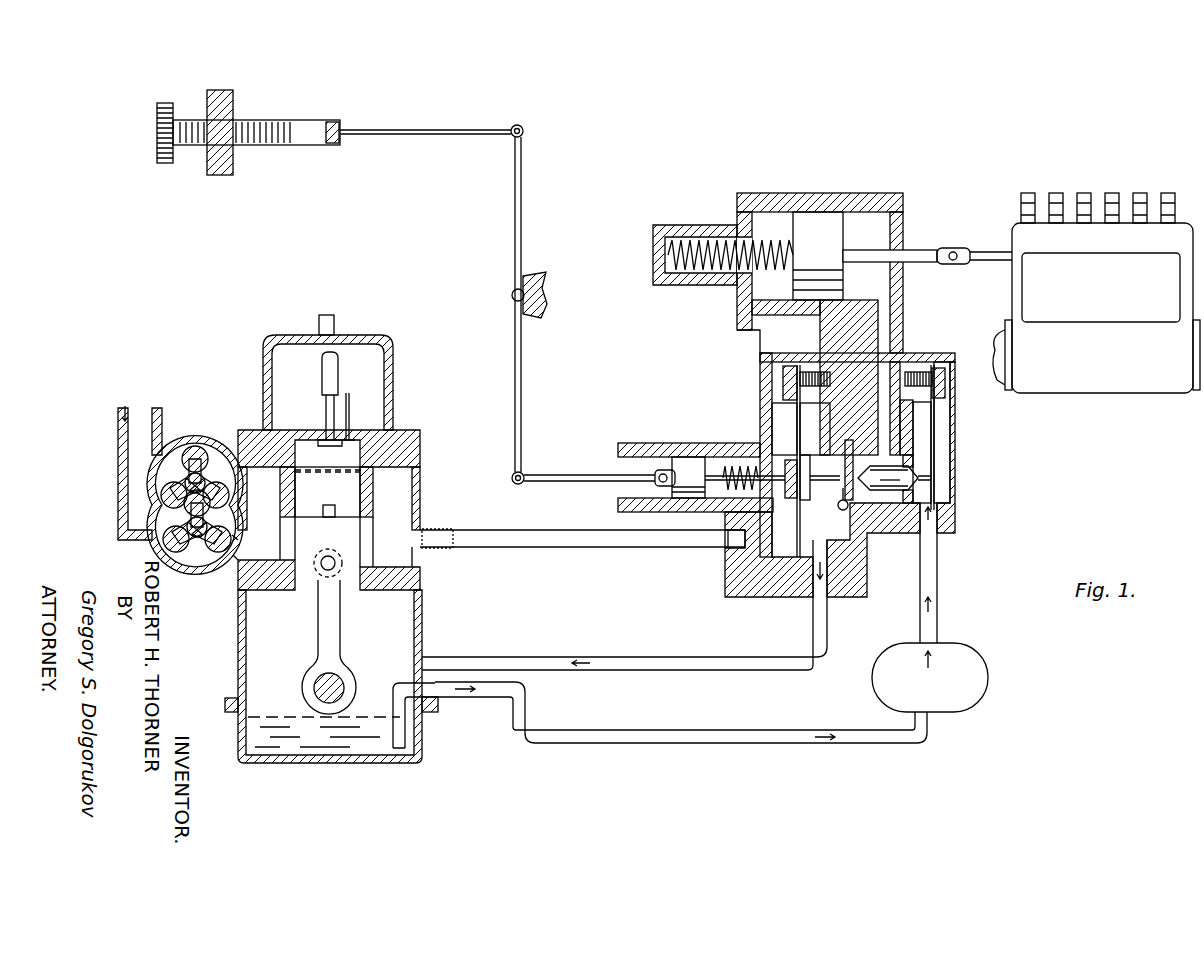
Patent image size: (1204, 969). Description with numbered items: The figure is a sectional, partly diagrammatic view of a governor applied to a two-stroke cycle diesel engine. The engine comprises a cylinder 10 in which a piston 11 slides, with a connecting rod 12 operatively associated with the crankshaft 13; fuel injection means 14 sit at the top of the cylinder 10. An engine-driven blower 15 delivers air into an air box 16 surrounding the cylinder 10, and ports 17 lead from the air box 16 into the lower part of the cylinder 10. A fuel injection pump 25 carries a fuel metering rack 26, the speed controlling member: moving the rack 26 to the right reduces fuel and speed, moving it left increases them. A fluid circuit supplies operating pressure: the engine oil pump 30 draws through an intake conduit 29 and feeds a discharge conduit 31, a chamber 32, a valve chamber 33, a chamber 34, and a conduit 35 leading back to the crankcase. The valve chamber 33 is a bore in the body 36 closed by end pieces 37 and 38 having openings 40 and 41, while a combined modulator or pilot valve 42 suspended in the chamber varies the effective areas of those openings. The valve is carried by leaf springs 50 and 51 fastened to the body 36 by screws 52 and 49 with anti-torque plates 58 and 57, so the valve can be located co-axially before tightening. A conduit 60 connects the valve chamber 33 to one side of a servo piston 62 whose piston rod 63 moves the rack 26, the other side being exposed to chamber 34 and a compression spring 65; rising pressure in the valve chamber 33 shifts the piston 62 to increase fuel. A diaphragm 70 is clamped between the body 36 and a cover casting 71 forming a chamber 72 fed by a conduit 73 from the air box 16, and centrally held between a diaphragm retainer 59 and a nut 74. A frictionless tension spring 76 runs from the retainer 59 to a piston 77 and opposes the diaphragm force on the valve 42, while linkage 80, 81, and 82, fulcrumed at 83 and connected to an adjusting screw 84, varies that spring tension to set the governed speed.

The cylinder 10 is at (363, 453).
The piston 11 is at (422, 575).
The connecting rod 12 is at (342, 610).
The crankshaft 13 is at (316, 682).
The fuel injection means 14 is at (320, 412).
The air pump or blower 15 is at (187, 437).
The air box 16 is at (250, 556).
The ports 17 is at (277, 465).
The fuel injection pump 25 is at (1168, 388).
The fuel metering rack 26 is at (980, 249).
The intake conduit 29 is at (708, 743).
The engine oil pump 30 is at (988, 668).
The discharge conduit 31 is at (938, 570).
The chamber 32 is at (948, 478).
The valve chamber 33 is at (925, 466).
The chamber 34 is at (846, 555).
The conduit 35 is at (450, 664).
The body 36 is at (838, 594).
The end piece 37 is at (845, 456).
The end piece 38 is at (906, 458).
The valve orifice or opening 40 is at (840, 497).
The valve orifice or opening 41 is at (928, 507).
The combined modulator or pilot valve 42 is at (888, 492).
The screw 49 is at (785, 376).
The leaf spring 50 is at (934, 424).
The leaf spring 51 is at (775, 408).
The screw 52 is at (940, 368).
The anti-torque plate 57 is at (810, 370).
The anti-torque plate 58 is at (937, 400).
The diaphragm retainer 59 is at (800, 462).
The conduit 60 is at (896, 318).
The piston 62 is at (815, 214).
The piston rod 63 is at (915, 250).
The compression spring 65 is at (690, 236).
The diaphragm 70 is at (828, 533).
The cover casting 71 is at (727, 589).
The chamber 72 is at (782, 430).
The conduit 73 is at (440, 534).
The nut 74 is at (748, 468).
The tension spring 76 is at (705, 470).
The piston 77 is at (680, 462).
The linkage 80 is at (575, 474).
The linkage 81 is at (514, 340).
The linkage 82 is at (408, 133).
The fulcrum 83 is at (512, 293).
The adjusting screw 84 is at (196, 145).